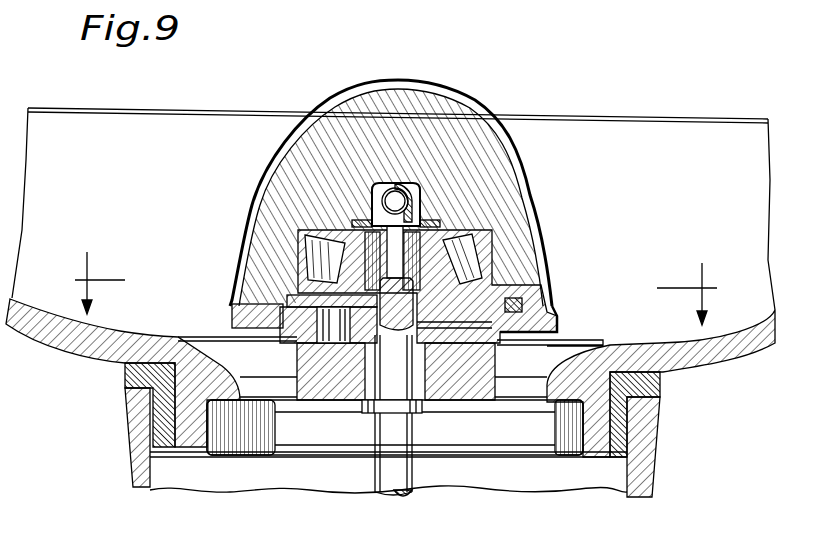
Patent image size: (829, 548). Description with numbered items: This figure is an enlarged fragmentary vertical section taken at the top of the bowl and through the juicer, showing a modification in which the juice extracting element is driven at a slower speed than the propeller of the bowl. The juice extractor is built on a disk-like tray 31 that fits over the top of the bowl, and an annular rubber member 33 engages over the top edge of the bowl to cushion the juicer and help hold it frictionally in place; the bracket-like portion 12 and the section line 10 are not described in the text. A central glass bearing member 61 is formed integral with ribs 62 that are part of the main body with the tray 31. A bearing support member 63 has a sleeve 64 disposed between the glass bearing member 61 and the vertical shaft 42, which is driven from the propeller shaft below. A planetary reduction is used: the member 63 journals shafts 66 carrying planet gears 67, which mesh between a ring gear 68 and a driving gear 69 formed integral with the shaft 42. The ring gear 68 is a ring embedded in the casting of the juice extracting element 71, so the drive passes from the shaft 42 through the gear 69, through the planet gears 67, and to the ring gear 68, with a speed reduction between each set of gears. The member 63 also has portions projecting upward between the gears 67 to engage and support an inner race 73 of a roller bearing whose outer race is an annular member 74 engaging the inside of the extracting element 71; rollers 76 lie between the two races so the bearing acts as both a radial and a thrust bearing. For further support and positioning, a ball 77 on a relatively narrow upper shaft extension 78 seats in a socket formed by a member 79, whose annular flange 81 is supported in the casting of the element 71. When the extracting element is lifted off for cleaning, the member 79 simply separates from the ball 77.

The section line 10 is at (394, 288).
The bracket 12 is at (122, 442).
The tray 31 is at (722, 355).
The annular rubber member 33 is at (660, 394).
The vertical shaft 42 is at (403, 472).
The central bearing member 61 is at (462, 392).
The ribs 62 is at (566, 341).
The bearing support member 63 is at (488, 341).
The sleeve 64 is at (364, 411).
The shafts 66 is at (232, 317).
The gears 67 is at (288, 296).
The ring gear 68 is at (282, 305).
The driving gear 69 is at (394, 360).
The juice extracting element 71 is at (460, 117).
The inner race 73 is at (497, 270).
The annular member 74 is at (478, 256).
The rollers 76 is at (445, 247).
The ball 77 is at (394, 192).
The upper shaft extension 78 is at (418, 193).
The member 79 is at (372, 188).
The annular flange 81 is at (425, 221).